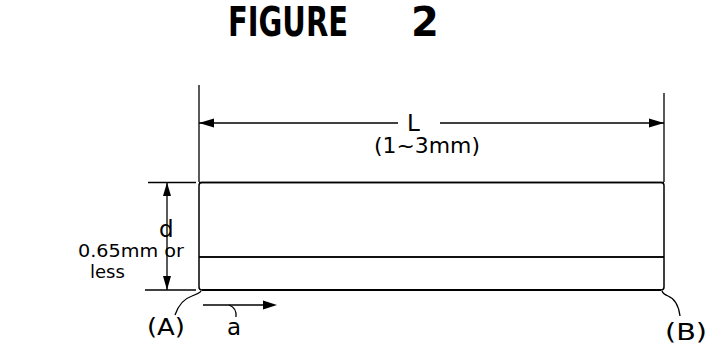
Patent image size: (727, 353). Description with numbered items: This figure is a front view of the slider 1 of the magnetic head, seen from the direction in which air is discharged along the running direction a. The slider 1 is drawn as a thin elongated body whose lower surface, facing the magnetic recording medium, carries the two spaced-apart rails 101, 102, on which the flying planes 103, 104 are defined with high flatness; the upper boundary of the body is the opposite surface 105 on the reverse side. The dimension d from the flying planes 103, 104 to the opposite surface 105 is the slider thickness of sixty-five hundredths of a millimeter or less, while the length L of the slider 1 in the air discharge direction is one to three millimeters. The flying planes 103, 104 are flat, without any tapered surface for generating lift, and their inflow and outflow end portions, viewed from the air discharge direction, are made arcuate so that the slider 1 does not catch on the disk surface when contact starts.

The slider 1 is at (582, 206).
The rail 101 is at (431, 301).
The rail 102 is at (553, 275).
The flying plane 103 is at (431, 317).
The flying plane 104 is at (368, 298).
The opposite surface 105 is at (486, 176).